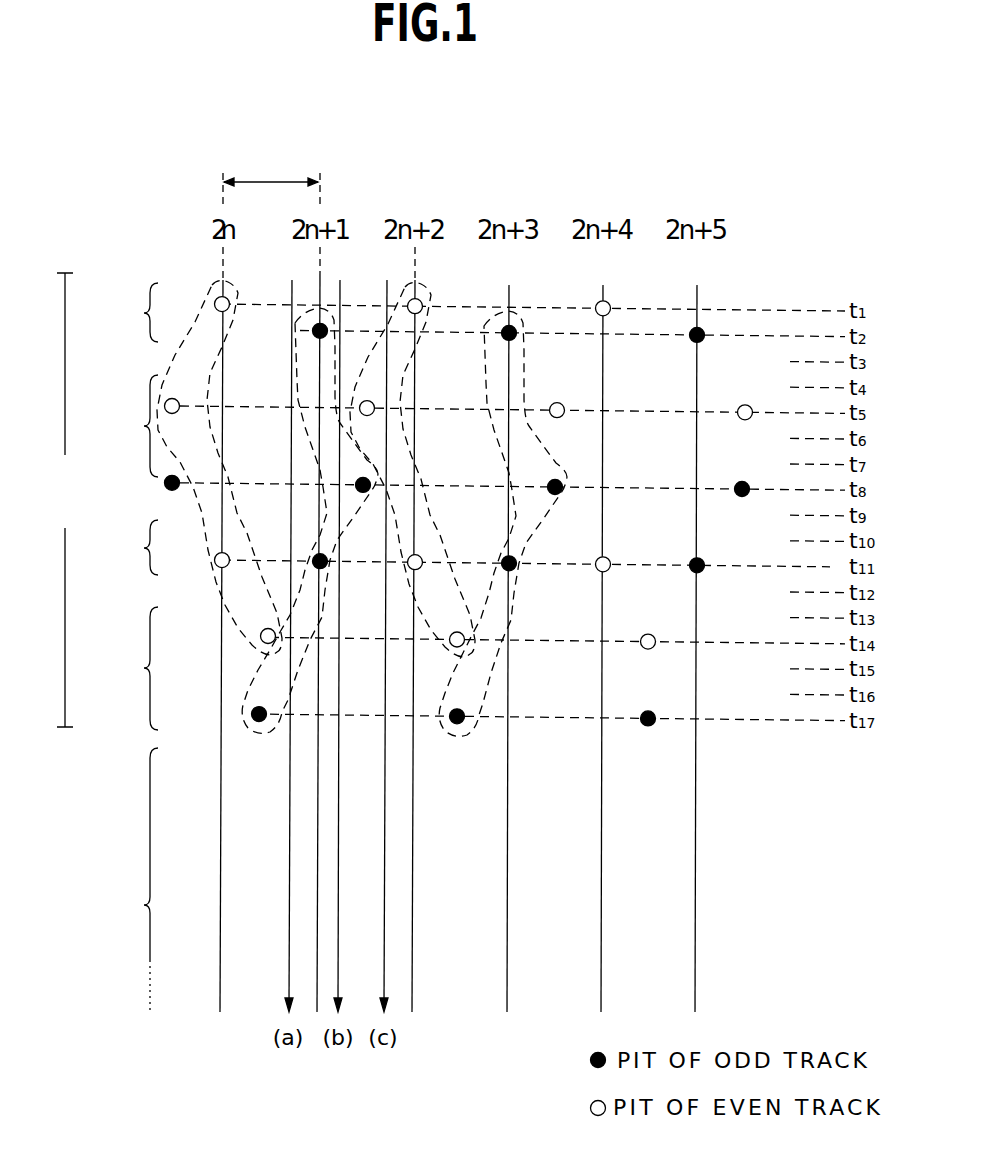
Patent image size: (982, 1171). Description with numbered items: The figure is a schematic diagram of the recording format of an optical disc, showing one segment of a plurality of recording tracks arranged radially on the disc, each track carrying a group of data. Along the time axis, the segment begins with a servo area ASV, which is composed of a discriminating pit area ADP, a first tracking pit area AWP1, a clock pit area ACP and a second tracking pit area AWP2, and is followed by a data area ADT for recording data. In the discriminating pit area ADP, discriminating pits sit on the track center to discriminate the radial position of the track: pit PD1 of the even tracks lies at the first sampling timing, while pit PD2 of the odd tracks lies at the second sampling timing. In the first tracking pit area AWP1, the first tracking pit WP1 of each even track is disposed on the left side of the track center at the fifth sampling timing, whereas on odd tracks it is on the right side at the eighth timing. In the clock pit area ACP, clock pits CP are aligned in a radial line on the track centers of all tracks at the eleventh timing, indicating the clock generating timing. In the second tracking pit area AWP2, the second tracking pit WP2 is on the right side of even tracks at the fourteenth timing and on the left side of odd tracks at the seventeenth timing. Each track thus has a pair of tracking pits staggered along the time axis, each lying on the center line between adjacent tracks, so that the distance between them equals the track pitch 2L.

The discriminating pit of even track PD1 is at (227, 294).
The discriminating pit of odd track PD2 is at (313, 329).
The first tracking pit WP1 is at (179, 404).
The second tracking pit WP2 is at (261, 638).
The clock pit CP is at (215, 560).
The servo area ASV is at (65, 500).
The discriminating pit area ADP is at (120, 312).
The first tracking pit area AWP1 is at (112, 426).
The clock pit area ACP is at (119, 547).
The second tracking pit area AWP2 is at (112, 668).
The data area ADT is at (120, 879).
The track pitch 2L is at (271, 171).